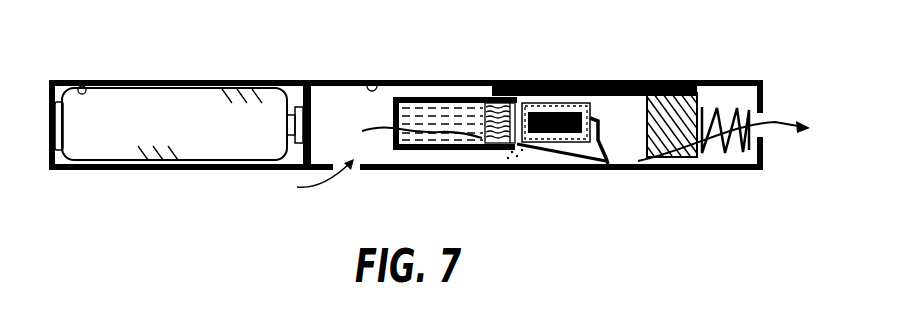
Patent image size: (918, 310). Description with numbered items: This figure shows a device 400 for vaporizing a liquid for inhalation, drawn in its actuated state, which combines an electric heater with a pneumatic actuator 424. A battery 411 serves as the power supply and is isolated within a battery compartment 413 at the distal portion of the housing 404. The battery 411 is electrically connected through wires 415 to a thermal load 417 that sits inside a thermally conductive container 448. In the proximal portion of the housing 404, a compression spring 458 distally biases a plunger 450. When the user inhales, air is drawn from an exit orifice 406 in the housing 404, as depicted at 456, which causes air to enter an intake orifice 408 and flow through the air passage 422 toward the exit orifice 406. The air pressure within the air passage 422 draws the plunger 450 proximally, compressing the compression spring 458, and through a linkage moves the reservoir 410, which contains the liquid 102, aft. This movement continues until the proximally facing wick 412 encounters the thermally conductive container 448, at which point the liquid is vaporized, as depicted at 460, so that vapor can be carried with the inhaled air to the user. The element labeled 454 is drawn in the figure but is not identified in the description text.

The liquid 102 is at (440, 131).
The device 400 is at (406, 85).
The housing 404 is at (342, 78).
The exit orifice 406 is at (762, 108).
The intake orifice 408 is at (360, 170).
The reservoir 410 is at (439, 93).
The battery 411 is at (203, 88).
The wick 412 is at (442, 89).
The battery compartment 413 is at (88, 80).
The wires 415 is at (613, 168).
The thermal load 417 is at (516, 104).
The air passage 422 is at (372, 85).
The pneumatic actuator 424 is at (737, 103).
The thermally conductive container 448 is at (550, 103).
The plunger 450 is at (650, 96).
The insulator 454 is at (600, 92).
The air drawn from exit orifice 456 is at (787, 134).
The compression spring 458 is at (741, 148).
The vaporizing liquid 460 is at (528, 158).